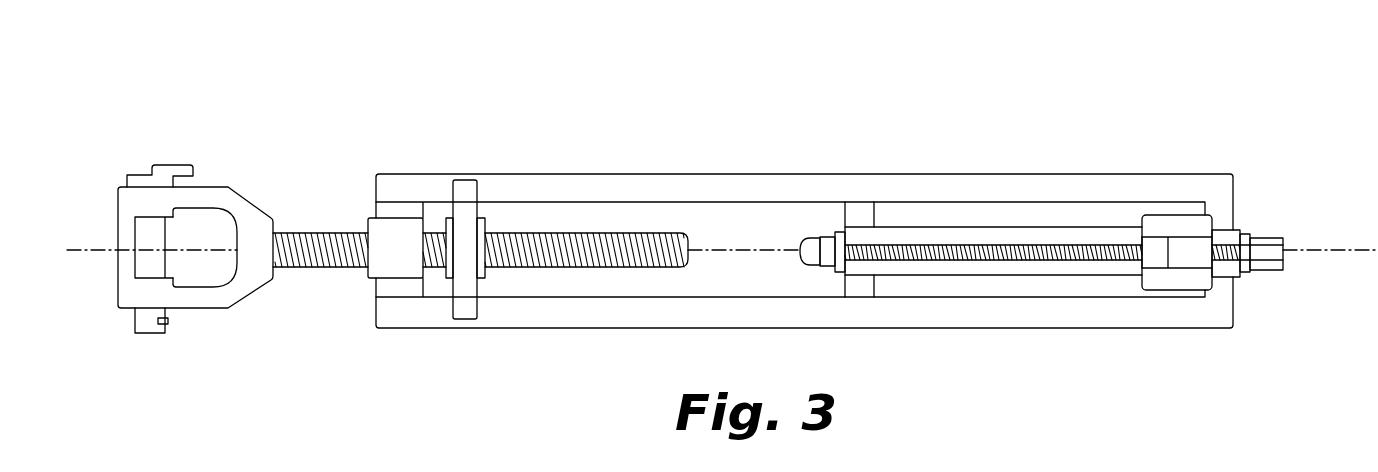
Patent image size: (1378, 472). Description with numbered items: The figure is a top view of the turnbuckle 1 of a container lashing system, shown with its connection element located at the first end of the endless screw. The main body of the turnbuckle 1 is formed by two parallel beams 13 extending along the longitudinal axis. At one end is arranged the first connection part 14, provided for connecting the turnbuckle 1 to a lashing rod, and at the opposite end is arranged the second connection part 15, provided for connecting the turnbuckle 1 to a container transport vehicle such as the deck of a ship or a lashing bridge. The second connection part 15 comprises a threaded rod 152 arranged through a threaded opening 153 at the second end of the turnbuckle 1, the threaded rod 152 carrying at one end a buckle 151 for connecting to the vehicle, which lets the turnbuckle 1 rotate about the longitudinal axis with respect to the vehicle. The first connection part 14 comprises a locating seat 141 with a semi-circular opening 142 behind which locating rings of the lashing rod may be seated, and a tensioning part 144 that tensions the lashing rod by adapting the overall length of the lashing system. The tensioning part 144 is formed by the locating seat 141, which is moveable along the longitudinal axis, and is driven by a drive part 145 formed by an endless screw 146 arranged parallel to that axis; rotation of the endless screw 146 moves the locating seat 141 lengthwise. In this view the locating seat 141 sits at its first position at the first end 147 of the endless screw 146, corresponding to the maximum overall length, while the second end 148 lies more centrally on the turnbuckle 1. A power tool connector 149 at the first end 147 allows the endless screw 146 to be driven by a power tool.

The turnbuckle 1 is at (537, 105).
The parallel beams 13 is at (755, 193).
The first connection part 14 is at (1068, 122).
The second connection part 15 is at (370, 140).
The locating seat 141 is at (1165, 280).
The semi-circular opening 142 is at (1142, 260).
The tensioning part 144 is at (983, 163).
The drive part 145 is at (1108, 240).
The endless screw 146 is at (895, 257).
The first end of the endless screw 147 is at (1282, 275).
The second end of the endless screw 148 is at (798, 257).
The power tool connector 149 is at (1263, 257).
The buckle 151 is at (225, 293).
The threaded rod 152 is at (605, 250).
The threaded opening 153 is at (365, 264).